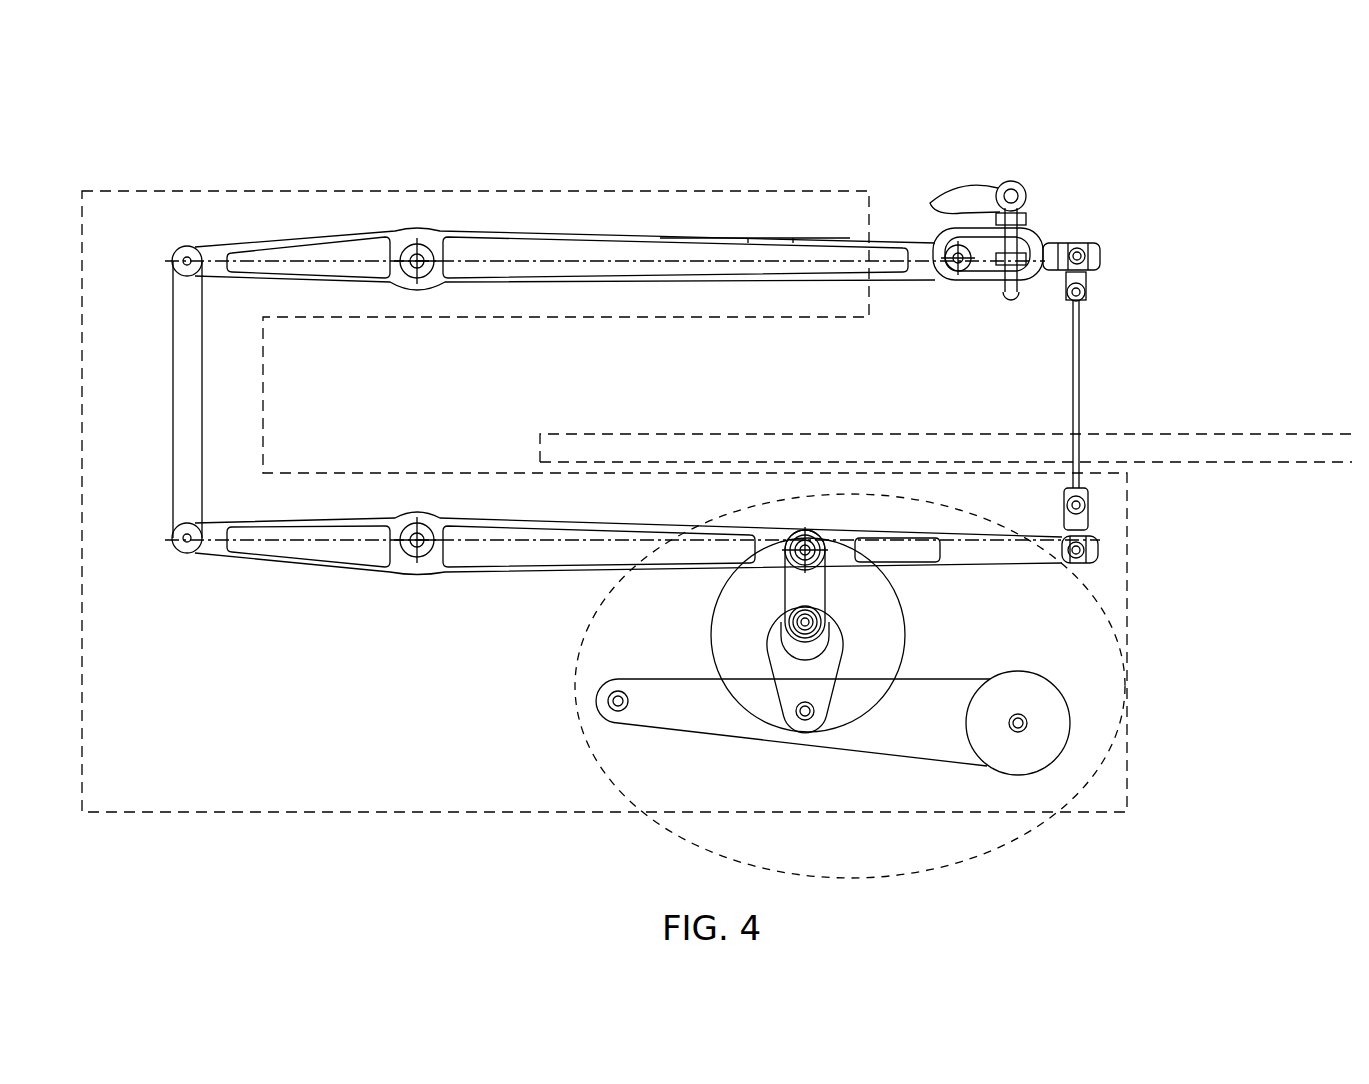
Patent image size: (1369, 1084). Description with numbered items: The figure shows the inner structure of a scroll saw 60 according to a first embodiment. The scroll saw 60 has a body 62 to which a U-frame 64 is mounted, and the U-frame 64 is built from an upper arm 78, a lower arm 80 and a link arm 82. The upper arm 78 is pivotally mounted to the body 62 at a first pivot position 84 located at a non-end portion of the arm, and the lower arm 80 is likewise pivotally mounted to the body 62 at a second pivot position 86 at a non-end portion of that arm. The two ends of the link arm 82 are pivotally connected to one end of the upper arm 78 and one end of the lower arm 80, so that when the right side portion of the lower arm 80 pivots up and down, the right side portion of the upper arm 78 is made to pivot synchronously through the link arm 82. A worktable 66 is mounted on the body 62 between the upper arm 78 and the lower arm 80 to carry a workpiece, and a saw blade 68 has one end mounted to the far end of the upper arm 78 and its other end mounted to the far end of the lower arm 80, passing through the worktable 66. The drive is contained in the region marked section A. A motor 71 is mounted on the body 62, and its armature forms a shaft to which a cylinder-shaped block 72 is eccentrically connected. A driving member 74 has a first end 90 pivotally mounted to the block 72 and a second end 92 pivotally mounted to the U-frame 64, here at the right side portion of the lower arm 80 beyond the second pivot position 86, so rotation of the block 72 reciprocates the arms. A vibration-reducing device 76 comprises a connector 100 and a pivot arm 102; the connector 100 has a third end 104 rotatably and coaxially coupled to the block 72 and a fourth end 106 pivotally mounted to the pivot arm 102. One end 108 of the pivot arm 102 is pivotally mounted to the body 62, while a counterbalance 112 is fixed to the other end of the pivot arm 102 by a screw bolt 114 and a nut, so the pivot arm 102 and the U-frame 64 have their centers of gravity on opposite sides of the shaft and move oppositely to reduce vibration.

The scroll saw 60 is at (1102, 188).
The body 62 is at (140, 208).
The U-frame 64 is at (605, 180).
The worktable 66 is at (1185, 445).
The saw blade 68 is at (1078, 393).
The motor 71 is at (866, 600).
The block 72 is at (840, 638).
The driving member 74 is at (790, 578).
The vibration-reducing device 76 is at (740, 762).
The upper arm 78 is at (640, 248).
The lower arm 80 is at (500, 562).
The link arm 82 is at (190, 380).
The first pivot position 84 is at (420, 256).
The second pivot position 86 is at (405, 562).
The first end 90 is at (790, 623).
The second end 92 is at (815, 537).
The connector 100 is at (765, 697).
The pivot arm 102 is at (883, 762).
The third end 104 is at (840, 627).
The fourth end 106 is at (800, 722).
The one end 108 is at (595, 700).
The counterbalance 112 is at (1050, 730).
The screw bolt 114 is at (1022, 720).
The section A is at (1015, 835).